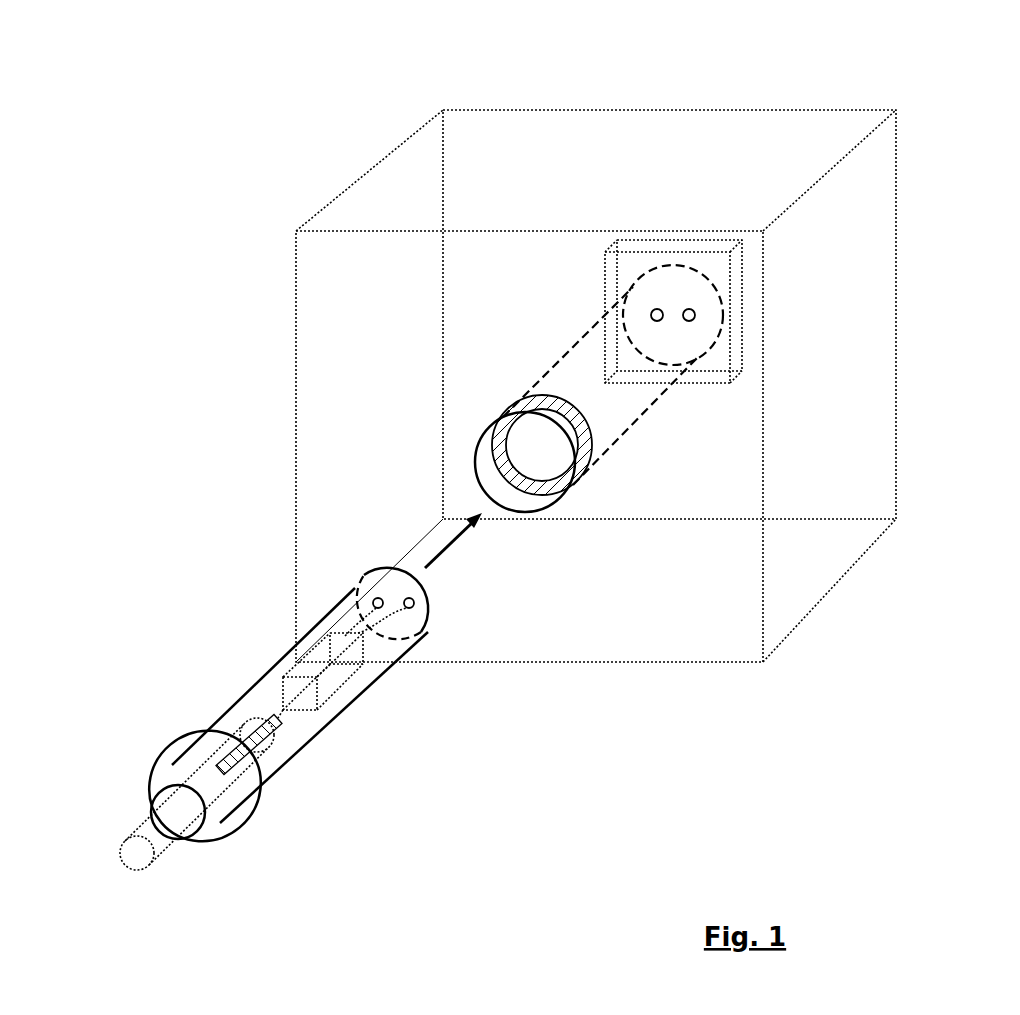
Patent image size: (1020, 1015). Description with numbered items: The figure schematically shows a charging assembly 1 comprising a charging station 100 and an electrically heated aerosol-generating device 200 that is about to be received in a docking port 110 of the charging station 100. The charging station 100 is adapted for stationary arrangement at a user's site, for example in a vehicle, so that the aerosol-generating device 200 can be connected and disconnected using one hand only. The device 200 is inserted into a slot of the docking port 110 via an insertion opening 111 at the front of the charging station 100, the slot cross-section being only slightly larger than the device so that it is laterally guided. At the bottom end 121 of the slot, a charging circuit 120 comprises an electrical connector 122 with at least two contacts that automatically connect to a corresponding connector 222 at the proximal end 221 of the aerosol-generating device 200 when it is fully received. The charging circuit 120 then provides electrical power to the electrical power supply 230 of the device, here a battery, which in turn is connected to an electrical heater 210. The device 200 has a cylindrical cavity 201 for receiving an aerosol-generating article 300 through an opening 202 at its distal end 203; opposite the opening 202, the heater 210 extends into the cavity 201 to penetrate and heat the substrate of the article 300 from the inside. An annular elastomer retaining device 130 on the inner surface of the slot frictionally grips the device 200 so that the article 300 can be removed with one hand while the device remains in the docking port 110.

The charging assembly 1 is at (124, 151).
The charging station 100 is at (467, 118).
The docking port 110 is at (580, 372).
The insertion opening 111 is at (490, 483).
The charging circuit 120 is at (633, 250).
The bottom end 121 is at (690, 283).
The electrical connector 122 is at (703, 335).
The retaining device 130 is at (590, 445).
The aerosol-generating device 200 is at (243, 713).
The cylindrical cavity 201 is at (178, 766).
The opening 202 is at (153, 798).
The distal end 203 is at (210, 815).
The electrical heater 210 is at (257, 743).
The proximal end 221 is at (388, 630).
The connector 222 is at (416, 622).
The electrical power supply 230 is at (330, 688).
The aerosol-generating article 300 is at (160, 843).